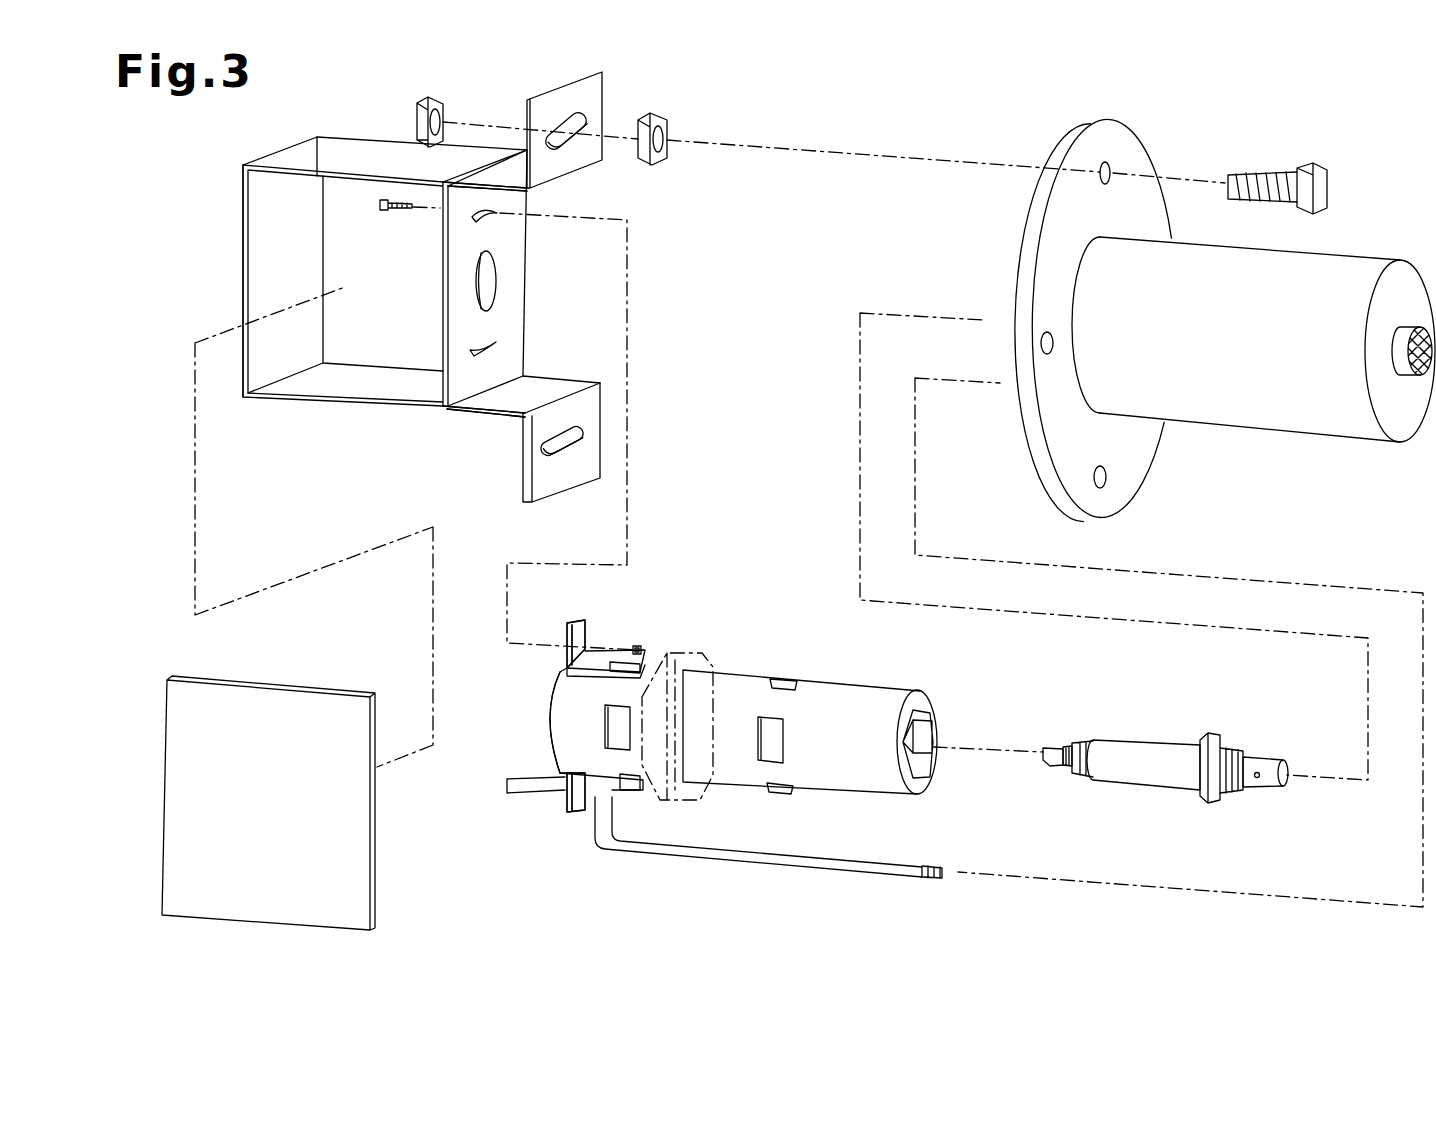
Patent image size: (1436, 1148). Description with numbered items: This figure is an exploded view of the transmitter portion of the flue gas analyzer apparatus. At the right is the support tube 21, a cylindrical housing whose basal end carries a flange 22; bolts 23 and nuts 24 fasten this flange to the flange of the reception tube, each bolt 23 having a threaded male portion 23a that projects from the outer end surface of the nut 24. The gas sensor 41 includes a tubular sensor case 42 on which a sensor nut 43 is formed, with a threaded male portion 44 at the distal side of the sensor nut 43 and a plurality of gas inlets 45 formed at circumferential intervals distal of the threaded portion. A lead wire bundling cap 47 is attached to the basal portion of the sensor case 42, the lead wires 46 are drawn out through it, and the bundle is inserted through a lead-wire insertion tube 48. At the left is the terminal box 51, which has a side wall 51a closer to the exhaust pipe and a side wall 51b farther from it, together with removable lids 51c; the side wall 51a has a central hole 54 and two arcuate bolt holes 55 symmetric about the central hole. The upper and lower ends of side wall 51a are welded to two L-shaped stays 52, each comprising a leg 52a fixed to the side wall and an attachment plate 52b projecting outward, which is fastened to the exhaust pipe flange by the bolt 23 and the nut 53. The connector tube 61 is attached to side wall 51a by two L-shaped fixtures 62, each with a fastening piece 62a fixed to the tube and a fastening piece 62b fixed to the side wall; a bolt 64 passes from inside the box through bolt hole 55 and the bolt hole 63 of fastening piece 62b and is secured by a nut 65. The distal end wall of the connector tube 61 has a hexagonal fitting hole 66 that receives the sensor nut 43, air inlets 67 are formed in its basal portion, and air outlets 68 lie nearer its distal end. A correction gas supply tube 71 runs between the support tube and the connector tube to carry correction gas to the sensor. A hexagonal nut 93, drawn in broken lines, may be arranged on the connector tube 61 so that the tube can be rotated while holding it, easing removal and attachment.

The support tube 21 is at (1352, 268).
The flange 22 is at (1125, 143).
The bolt 23 is at (1308, 170).
The threaded male portion 23a is at (1273, 157).
The nut 24 is at (660, 160).
The gas sensor 41 is at (1169, 743).
The sensor case 42 is at (1112, 747).
The sensor nut 43 is at (1210, 745).
The threaded male portion 44 is at (1237, 757).
The gas inlets 45 is at (1258, 760).
The lead wires 46 is at (1067, 746).
The lead wire bundling cap 47 is at (1068, 775).
The lead-wire insertion tube 48 is at (1045, 748).
The terminal box 51 is at (347, 147).
The side wall 51a is at (510, 293).
The side wall 51b is at (247, 220).
The removable lid 51c is at (375, 828).
The stay 52 is at (437, 436).
The leg 52a is at (507, 188).
The attachment plate 52b is at (565, 97).
The nut 53 is at (422, 105).
The central hole 54 is at (480, 288).
The arcuate bolt holes 55 is at (495, 213).
The connector tube 61 is at (857, 693).
The fixture 62 is at (488, 668).
The fastening piece 62a is at (563, 693).
The fastening piece 62b is at (567, 660).
The bolt hole 63 is at (577, 632).
The bolt 64 is at (384, 211).
The nut 65 is at (637, 646).
The hexagonal fitting hole 66 is at (928, 738).
The air inlets 67 is at (643, 667).
The air outlets 68 is at (788, 680).
The correction gas supply tube 71 is at (747, 858).
The hexagonal nut 93 is at (683, 648).